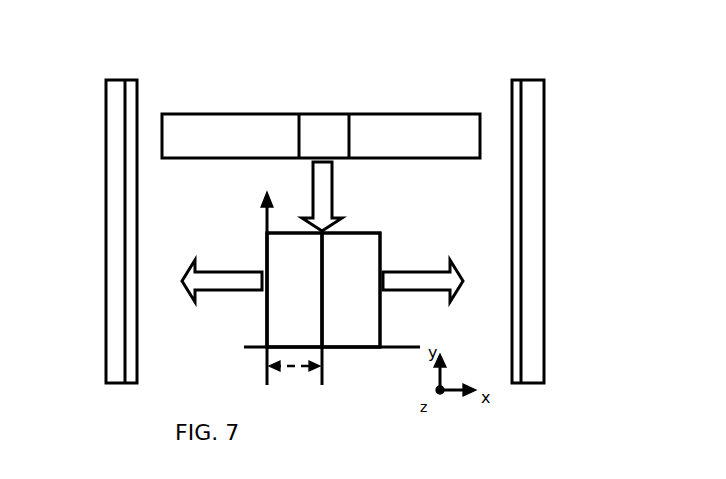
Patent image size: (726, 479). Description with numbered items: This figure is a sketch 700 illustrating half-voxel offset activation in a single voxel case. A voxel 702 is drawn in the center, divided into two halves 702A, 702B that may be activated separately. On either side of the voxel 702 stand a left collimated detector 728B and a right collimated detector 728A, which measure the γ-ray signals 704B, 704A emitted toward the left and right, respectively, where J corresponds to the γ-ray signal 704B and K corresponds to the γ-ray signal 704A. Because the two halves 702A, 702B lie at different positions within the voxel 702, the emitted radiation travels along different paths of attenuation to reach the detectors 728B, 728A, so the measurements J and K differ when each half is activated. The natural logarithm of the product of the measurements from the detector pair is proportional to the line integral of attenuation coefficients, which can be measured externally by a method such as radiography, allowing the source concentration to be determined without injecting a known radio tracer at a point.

The sketch 700 is at (282, 49).
The voxel 702 is at (354, 363).
The half of the voxel 702A is at (303, 240).
The half of the voxel 702B is at (355, 248).
The γ-ray signal 704A is at (412, 282).
The γ-ray signal 704B is at (238, 282).
The right collimated detector 728A is at (542, 402).
The left collimated detector 728B is at (112, 402).